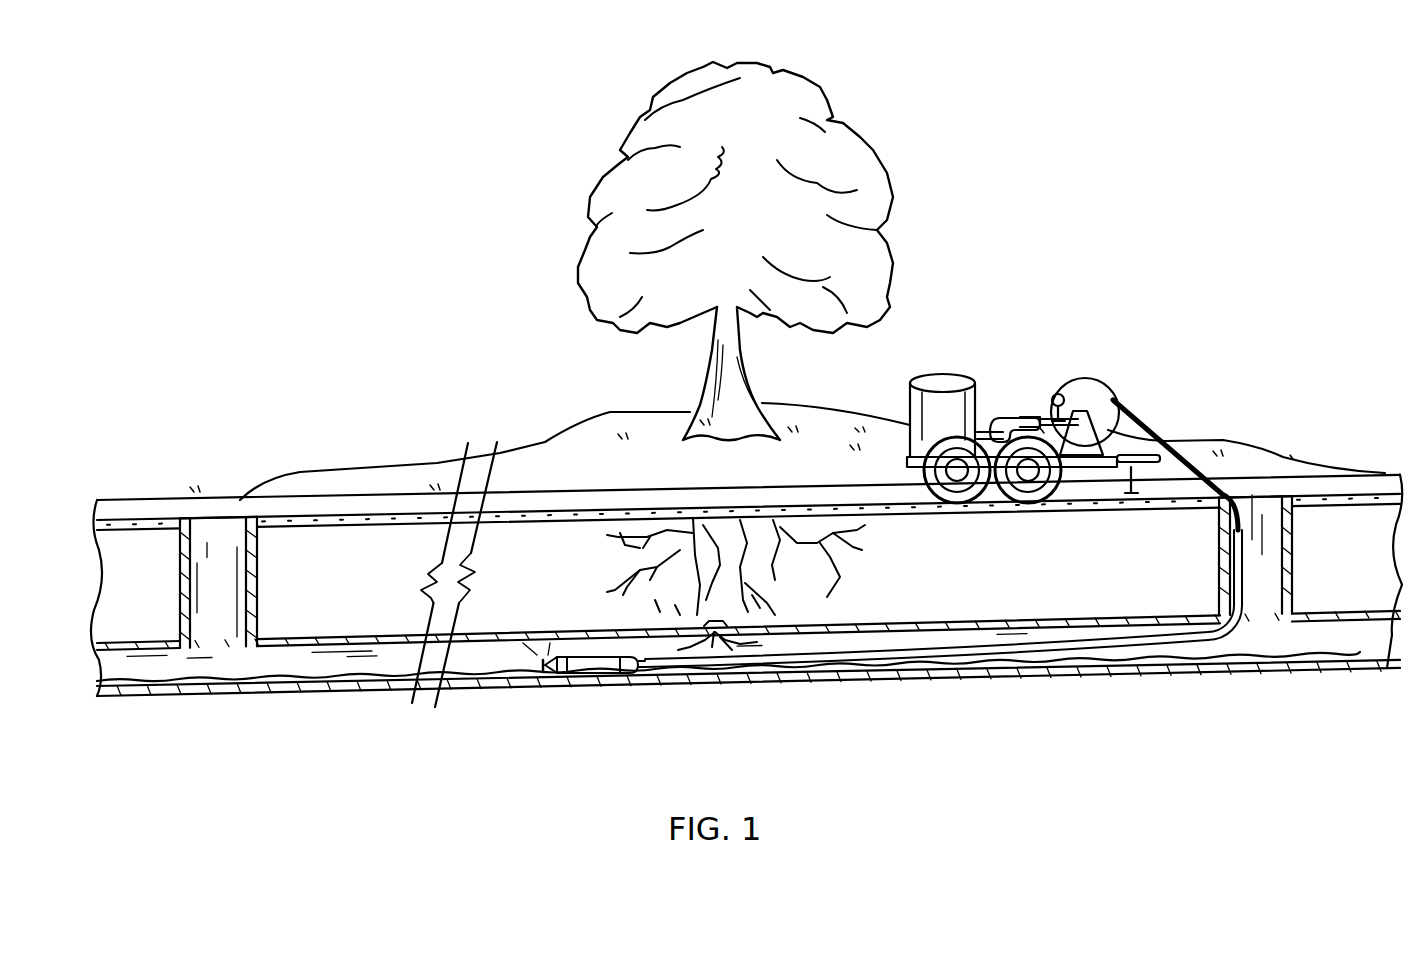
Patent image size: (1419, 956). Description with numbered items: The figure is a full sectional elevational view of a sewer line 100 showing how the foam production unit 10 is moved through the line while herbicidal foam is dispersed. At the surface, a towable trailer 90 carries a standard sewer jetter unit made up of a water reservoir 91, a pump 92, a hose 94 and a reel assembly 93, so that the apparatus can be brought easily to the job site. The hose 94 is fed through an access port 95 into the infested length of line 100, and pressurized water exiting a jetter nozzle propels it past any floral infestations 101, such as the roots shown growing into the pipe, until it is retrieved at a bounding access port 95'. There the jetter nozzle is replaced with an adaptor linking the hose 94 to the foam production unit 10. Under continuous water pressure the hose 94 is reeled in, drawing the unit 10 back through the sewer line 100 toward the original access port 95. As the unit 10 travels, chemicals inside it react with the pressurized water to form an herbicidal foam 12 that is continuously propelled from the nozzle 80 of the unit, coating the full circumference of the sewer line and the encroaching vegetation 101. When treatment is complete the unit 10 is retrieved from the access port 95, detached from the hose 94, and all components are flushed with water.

The foam production unit 10 is at (597, 667).
The herbicidal foam 12 is at (543, 650).
The nozzle 80 is at (543, 688).
The towable trailer 90 is at (903, 455).
The water reservoir 91 is at (945, 398).
The pump 92 is at (1025, 420).
The reel assembly 93 is at (1083, 392).
The hose 94 is at (1140, 420).
The access port 95 is at (1280, 506).
The bounding access port 95' is at (202, 540).
The sewer line 100 is at (1248, 640).
The floral infestations 101 is at (743, 597).